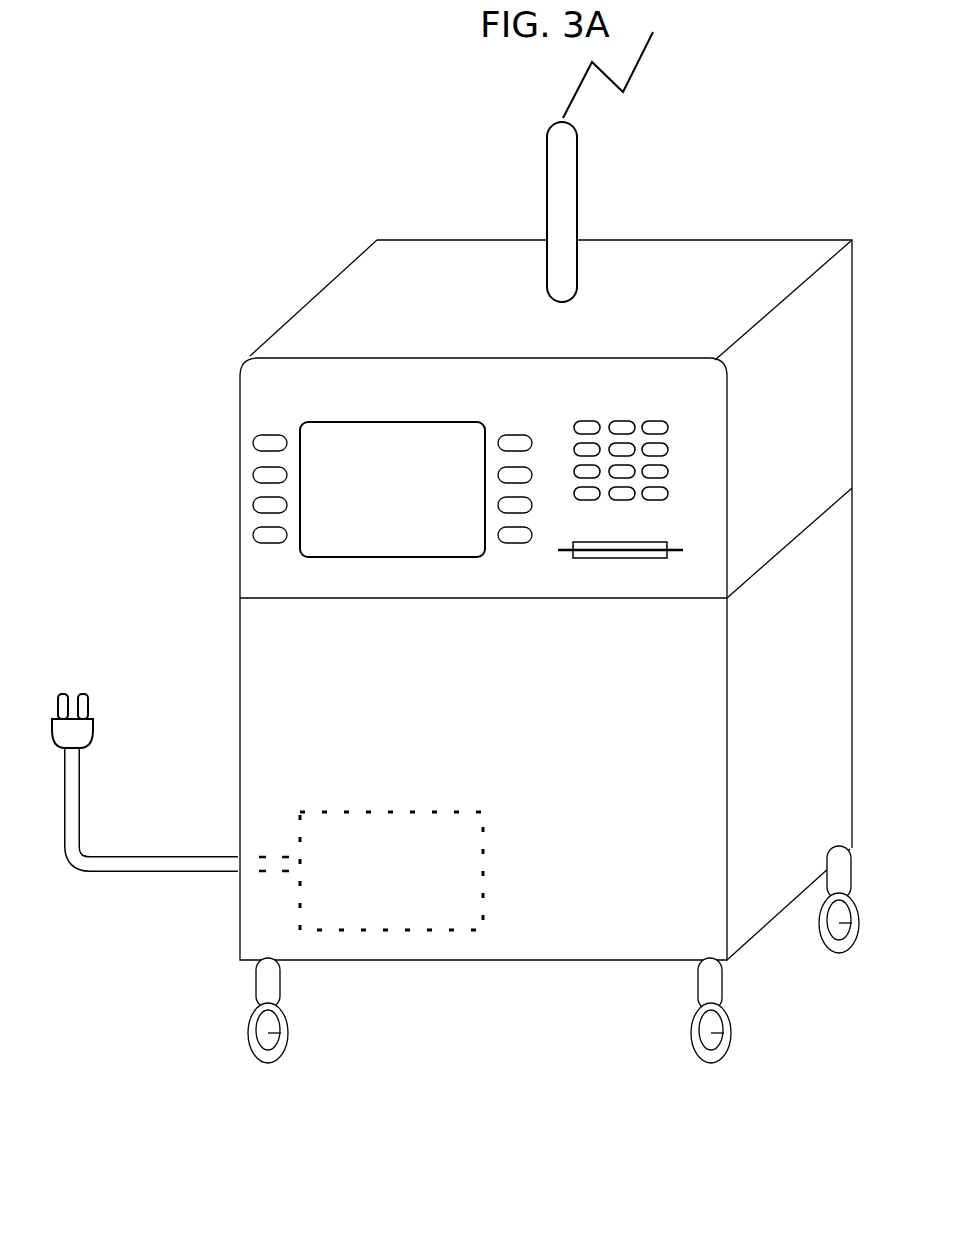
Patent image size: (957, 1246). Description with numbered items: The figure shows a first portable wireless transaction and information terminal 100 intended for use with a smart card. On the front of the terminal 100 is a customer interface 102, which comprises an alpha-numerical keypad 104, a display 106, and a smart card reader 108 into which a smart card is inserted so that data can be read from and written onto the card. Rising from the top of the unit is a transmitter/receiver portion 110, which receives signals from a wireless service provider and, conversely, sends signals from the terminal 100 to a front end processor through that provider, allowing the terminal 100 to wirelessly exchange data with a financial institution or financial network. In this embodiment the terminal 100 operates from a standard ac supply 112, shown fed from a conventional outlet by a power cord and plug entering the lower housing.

The wireless terminal 100 is at (363, 270).
The customer interface 102 is at (255, 443).
The alpha-numerical keypad 104 is at (665, 427).
The display 106 is at (397, 420).
The smart card reader 108 is at (667, 542).
The transmitter/receiver portion 110 is at (577, 240).
The ac supply 112 is at (360, 810).